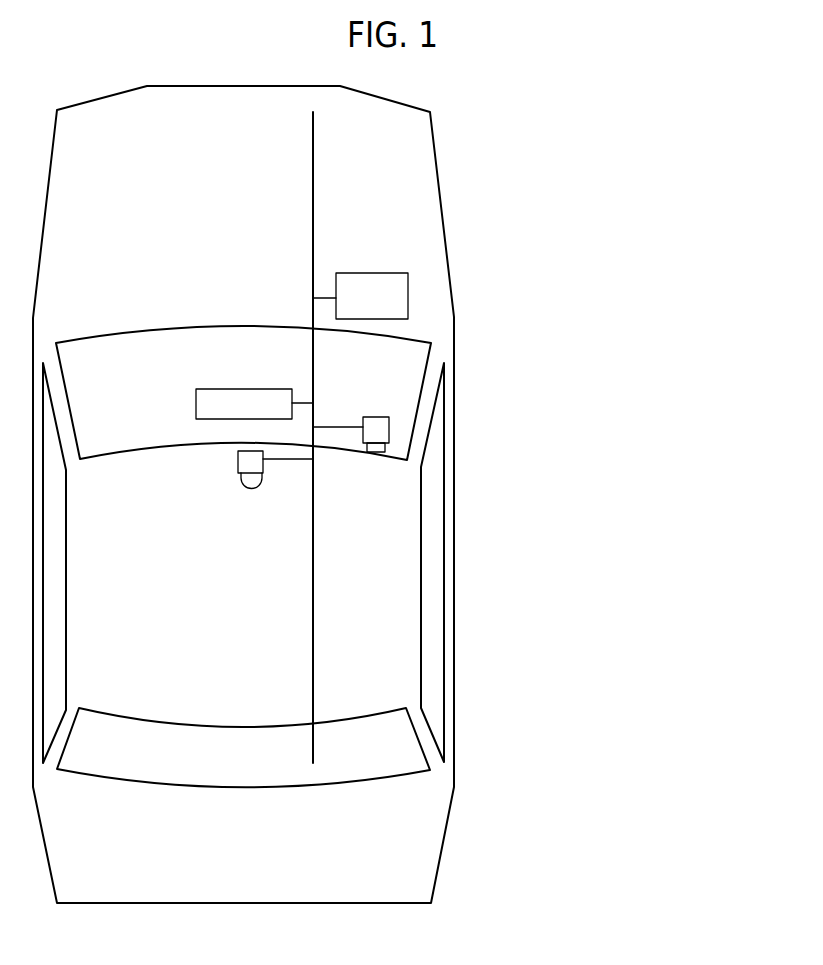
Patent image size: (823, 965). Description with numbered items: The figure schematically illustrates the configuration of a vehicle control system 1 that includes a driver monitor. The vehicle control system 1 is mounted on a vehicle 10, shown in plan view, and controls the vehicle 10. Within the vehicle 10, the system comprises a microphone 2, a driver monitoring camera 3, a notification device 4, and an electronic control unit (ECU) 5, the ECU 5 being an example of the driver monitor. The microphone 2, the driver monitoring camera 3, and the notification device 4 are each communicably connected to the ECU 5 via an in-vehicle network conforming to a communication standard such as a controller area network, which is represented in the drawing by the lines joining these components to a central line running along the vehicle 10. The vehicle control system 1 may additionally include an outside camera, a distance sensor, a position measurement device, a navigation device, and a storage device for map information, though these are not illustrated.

The vehicle control system 1 is at (685, 808).
The vehicle 10 is at (454, 749).
The microphone 2 is at (238, 458).
The driver monitoring camera 3 is at (389, 432).
The notification device 4 is at (196, 397).
The electronic control unit (ECU) 5 is at (408, 306).